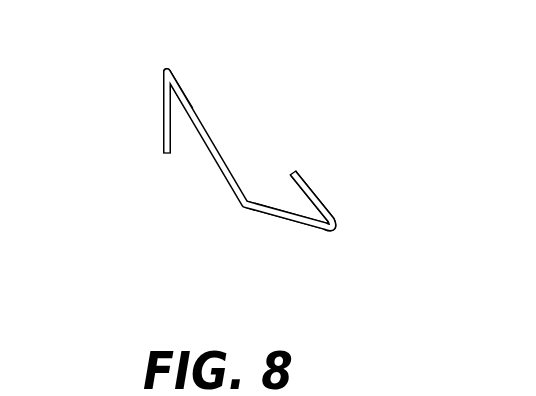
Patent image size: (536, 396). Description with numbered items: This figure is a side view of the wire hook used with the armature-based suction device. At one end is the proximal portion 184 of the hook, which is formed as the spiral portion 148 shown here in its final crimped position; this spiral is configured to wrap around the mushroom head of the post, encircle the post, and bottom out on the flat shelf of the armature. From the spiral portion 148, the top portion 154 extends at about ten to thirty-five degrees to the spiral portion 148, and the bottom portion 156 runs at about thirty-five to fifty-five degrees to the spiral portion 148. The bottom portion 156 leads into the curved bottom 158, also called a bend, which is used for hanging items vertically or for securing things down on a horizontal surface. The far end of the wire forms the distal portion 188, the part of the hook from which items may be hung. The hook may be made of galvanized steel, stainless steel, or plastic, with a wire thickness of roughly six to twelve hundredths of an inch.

The spiral portion 148 is at (104, 178).
The top portion 154 is at (254, 122).
The bottom portion 156 is at (238, 237).
The curved bottom 158 is at (372, 207).
The proximal portion 184 is at (116, 110).
The distal portion 188 is at (363, 260).